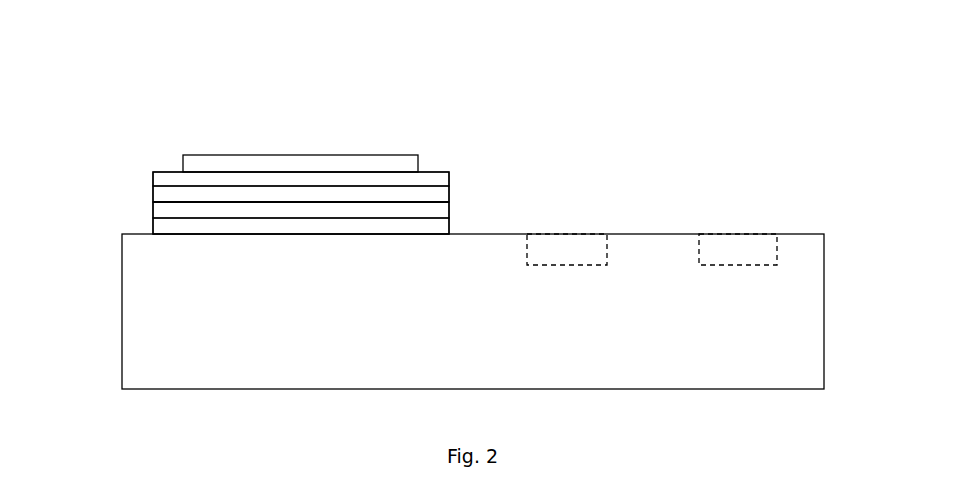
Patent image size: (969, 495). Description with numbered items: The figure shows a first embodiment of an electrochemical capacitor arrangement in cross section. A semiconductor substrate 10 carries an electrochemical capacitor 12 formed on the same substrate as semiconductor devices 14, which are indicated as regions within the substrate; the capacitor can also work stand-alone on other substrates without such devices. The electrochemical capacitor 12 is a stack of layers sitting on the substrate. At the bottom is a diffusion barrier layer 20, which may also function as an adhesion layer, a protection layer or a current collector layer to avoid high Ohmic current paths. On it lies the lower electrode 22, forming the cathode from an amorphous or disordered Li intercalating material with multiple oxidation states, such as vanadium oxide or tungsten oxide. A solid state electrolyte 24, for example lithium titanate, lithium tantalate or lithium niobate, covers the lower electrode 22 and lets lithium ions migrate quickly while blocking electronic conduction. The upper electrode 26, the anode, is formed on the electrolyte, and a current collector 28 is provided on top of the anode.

The semiconductor substrate 10 is at (138, 312).
The electrochemical capacitor 12 is at (150, 92).
The semiconductor devices 14 is at (558, 249).
The diffusion barrier layer 20 is at (185, 228).
The lower electrode 22 is at (175, 213).
The solid state electrolyte 24 is at (165, 192).
The upper electrode 26 is at (170, 182).
The current collector 28 is at (278, 155).